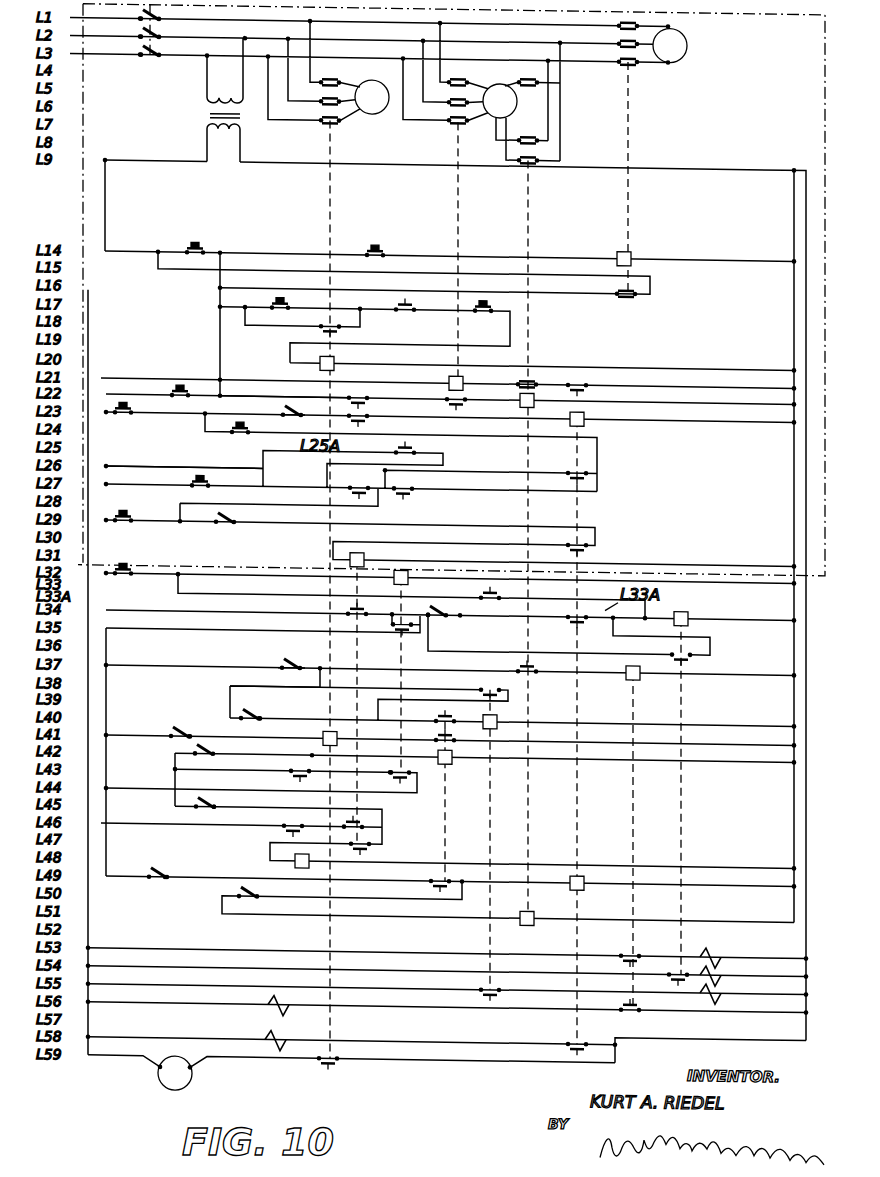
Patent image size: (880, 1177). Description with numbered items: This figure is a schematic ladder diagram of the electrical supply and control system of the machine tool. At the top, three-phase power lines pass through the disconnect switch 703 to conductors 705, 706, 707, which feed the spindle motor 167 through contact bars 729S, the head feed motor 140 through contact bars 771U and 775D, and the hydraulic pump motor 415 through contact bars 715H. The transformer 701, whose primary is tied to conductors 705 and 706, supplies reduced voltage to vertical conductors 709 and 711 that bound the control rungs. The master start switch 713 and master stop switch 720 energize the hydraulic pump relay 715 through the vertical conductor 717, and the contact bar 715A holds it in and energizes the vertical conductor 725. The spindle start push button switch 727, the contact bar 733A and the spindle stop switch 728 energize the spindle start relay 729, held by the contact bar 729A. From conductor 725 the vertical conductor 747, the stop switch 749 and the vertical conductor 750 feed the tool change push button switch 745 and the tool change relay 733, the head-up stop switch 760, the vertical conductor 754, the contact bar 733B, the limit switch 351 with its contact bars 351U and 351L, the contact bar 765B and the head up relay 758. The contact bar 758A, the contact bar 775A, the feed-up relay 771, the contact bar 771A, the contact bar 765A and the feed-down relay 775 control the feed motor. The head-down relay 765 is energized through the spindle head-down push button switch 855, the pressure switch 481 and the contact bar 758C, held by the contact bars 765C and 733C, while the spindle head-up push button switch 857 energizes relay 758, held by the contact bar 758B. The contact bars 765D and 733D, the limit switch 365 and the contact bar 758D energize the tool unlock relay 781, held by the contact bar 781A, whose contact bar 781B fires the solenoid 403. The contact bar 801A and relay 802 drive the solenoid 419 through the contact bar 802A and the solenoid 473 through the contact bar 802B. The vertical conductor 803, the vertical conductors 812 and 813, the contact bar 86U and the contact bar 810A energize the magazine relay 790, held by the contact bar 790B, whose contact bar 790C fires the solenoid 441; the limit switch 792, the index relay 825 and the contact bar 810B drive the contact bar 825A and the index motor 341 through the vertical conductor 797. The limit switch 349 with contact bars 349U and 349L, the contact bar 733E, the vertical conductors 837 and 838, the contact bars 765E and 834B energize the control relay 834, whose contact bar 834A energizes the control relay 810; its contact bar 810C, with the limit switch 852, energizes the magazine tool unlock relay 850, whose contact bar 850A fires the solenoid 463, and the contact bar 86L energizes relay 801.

The disconnect switch 703 is at (160, 13).
The conductor 706 is at (183, 31).
The conductor 705 is at (180, 49).
The conductor 707 is at (222, 6).
The transformer 701 is at (196, 121).
The contact bars 729S is at (318, 122).
The spindle motor 167 is at (380, 110).
The contact bars 771U is at (452, 122).
The head feed motor 140 is at (501, 111).
The contact bars 775D is at (540, 156).
The contact bars 715H is at (643, 76).
The hydraulic pump motor 415 is at (687, 42).
The conductor 709 is at (128, 165).
The conductor 711 is at (692, 170).
The vertical conductor 717 is at (105, 218).
The master start switch 713 is at (207, 250).
The master stop switch 720 is at (383, 230).
The hydraulic pump relay 715 is at (633, 258).
The vertical conductor 725 is at (218, 326).
The spindle start push button switch 727 is at (270, 302).
The contact bar 733A is at (398, 304).
The spindle stop switch 728 is at (483, 312).
The contact bar 729A is at (318, 330).
The spindle start relay 729 is at (333, 361).
The contact bar 715A is at (630, 303).
The stop switch 749 is at (185, 378).
The vertical conductor 747 is at (222, 393).
The contact bar 765A is at (356, 397).
The feed-up relay 771 is at (462, 382).
The contact bar 775A is at (530, 376).
The contact bar 758A is at (590, 390).
The limit switch 351 is at (286, 415).
The contact bar 351U is at (289, 406).
The contact bar 765B is at (360, 418).
The contact bar 771A is at (462, 414).
The feed-down relay 775 is at (527, 410).
The head up relay 758 is at (590, 422).
The spindle head-up push button switch 857 is at (131, 421).
The vertical conductor 750 is at (110, 466).
The head-up stop switch 760 is at (239, 444).
The contact bar 733C is at (420, 447).
The vertical conductor 754 is at (597, 462).
The contact bar 765C is at (352, 492).
The contact bar 733B is at (412, 496).
The contact bar 758B is at (597, 488).
The spindle head-down push button switch 855 is at (131, 527).
The pressure switch 481 is at (234, 536).
The contact bar 758C is at (567, 544).
The head down relay 765 is at (350, 559).
The tool change relay 733 is at (408, 580).
The tool change push button switch 745 is at (126, 582).
The contact bar 765D is at (352, 611).
The limit switch 365 is at (445, 625).
The contact bar 758D is at (580, 620).
The tool unlock relay 781 is at (688, 613).
The contact bar 733D is at (386, 638).
The contact bar 351L is at (280, 672).
The contact bar 801A is at (540, 667).
The contact bar 781A is at (700, 652).
The relay 802 is at (628, 676).
The vertical conductor 803 is at (107, 695).
The vertical conductor 813 is at (230, 702).
The vertical conductor 812 is at (320, 688).
The contact bar 790B is at (482, 690).
The limit switch 792 is at (174, 726).
The contact bar 86U is at (228, 722).
The index relay 825 is at (322, 734).
The contact bar 810A is at (448, 709).
The magazine relay 790 is at (492, 724).
The contact bar 349U is at (195, 752).
The contact bar 834A is at (300, 765).
The contact bar 810B is at (436, 741).
The control relay 810 is at (448, 760).
The vertical conductor 837 is at (175, 770).
The limit switch 349 is at (206, 804).
The contact bar 733E is at (395, 790).
The contact bar 834B is at (277, 822).
The vertical conductor 838 is at (372, 828).
The contact bar 349L is at (200, 812).
The contact bar 765E is at (360, 849).
The control relay 834 is at (296, 862).
The magazine tool unlock relay 850 is at (594, 860).
The limit switch 852 is at (158, 890).
The contact bar 86L is at (257, 902).
The contact bar 810C is at (430, 884).
The relay 801 is at (524, 924).
The contact bar 802A is at (632, 945).
The solenoid 419 is at (712, 950).
The solenoid 403 is at (716, 972).
The contact bar 781B is at (668, 974).
The solenoid 441 is at (715, 999).
The solenoid 473 is at (274, 1007).
The solenoid 463 is at (280, 1040).
The contact bar 790C is at (488, 1000).
The contact bar 802B is at (636, 1010).
The vertical conductor 797 is at (618, 1053).
The contact bar 850A is at (566, 1049).
The index motor 341 is at (186, 1077).
The contact bar 825A is at (333, 1068).